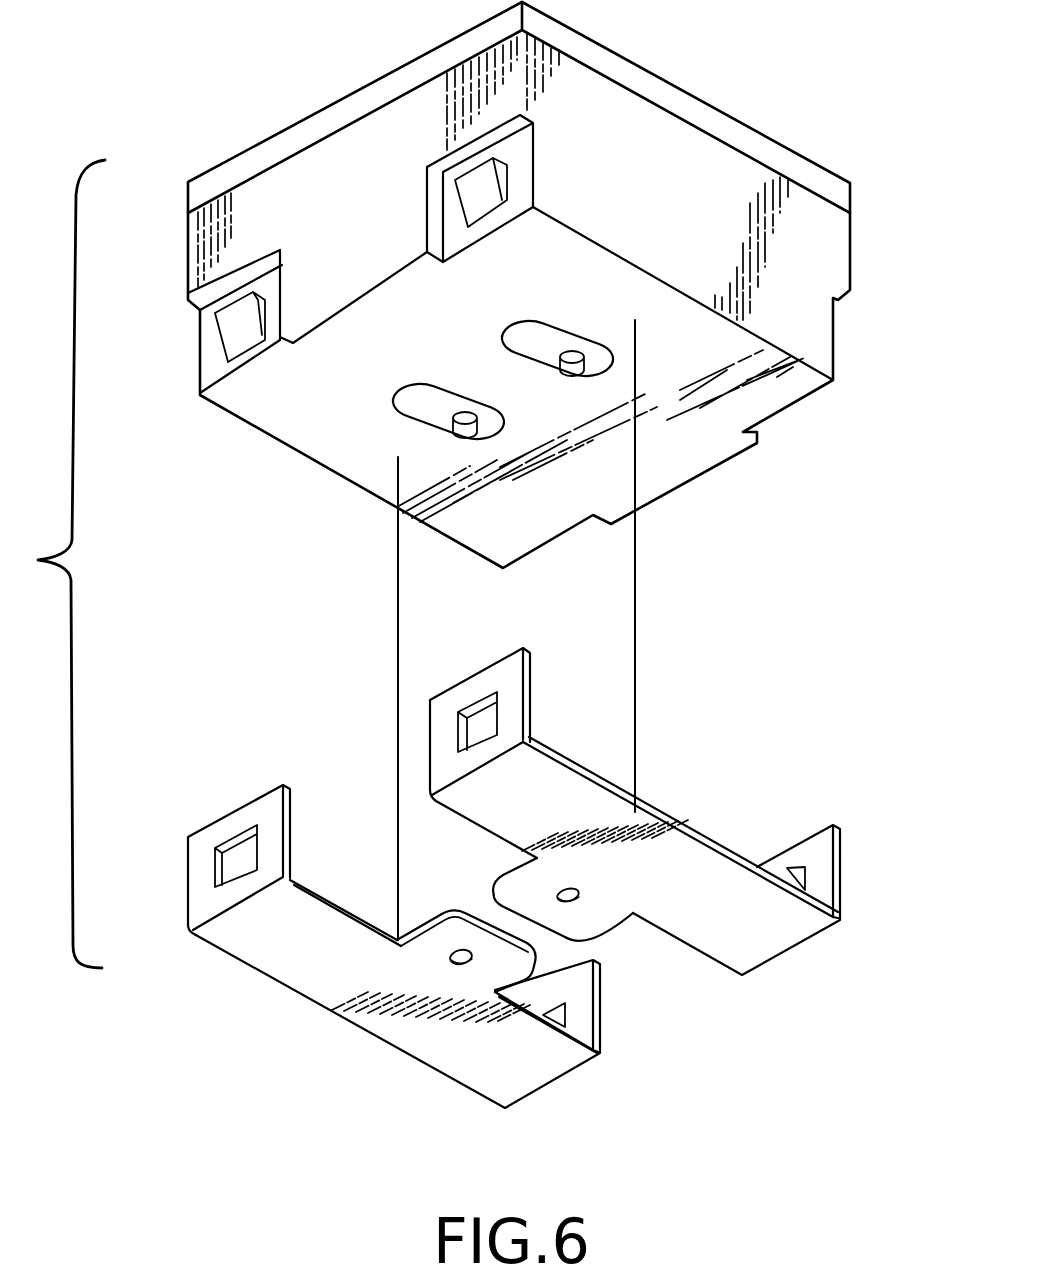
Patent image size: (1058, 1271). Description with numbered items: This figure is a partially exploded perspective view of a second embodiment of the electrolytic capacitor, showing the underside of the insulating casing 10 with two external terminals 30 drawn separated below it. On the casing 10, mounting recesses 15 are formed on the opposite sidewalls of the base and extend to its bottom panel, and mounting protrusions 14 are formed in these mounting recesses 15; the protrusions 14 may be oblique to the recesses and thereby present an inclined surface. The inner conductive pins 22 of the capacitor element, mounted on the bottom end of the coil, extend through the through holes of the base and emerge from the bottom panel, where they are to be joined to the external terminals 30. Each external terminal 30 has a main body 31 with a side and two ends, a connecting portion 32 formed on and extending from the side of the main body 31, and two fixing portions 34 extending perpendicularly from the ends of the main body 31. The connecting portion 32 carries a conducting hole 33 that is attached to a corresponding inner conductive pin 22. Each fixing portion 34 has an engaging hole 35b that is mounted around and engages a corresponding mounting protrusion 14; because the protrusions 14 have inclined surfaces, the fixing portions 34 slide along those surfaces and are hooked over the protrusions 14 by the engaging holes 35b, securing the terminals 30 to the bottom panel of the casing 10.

The insulating casing 10 is at (749, 122).
The mounting protrusion 14 is at (481, 187).
The mounting recess 15 is at (463, 137).
The inner conductive pin 22 is at (578, 357).
The external terminal 30 is at (514, 889).
The main body 31 is at (627, 853).
The connecting portion 32 is at (561, 912).
The conducting hole 33 is at (557, 896).
The fixing portion 34 is at (454, 745).
The engaging hole 35b is at (473, 716).